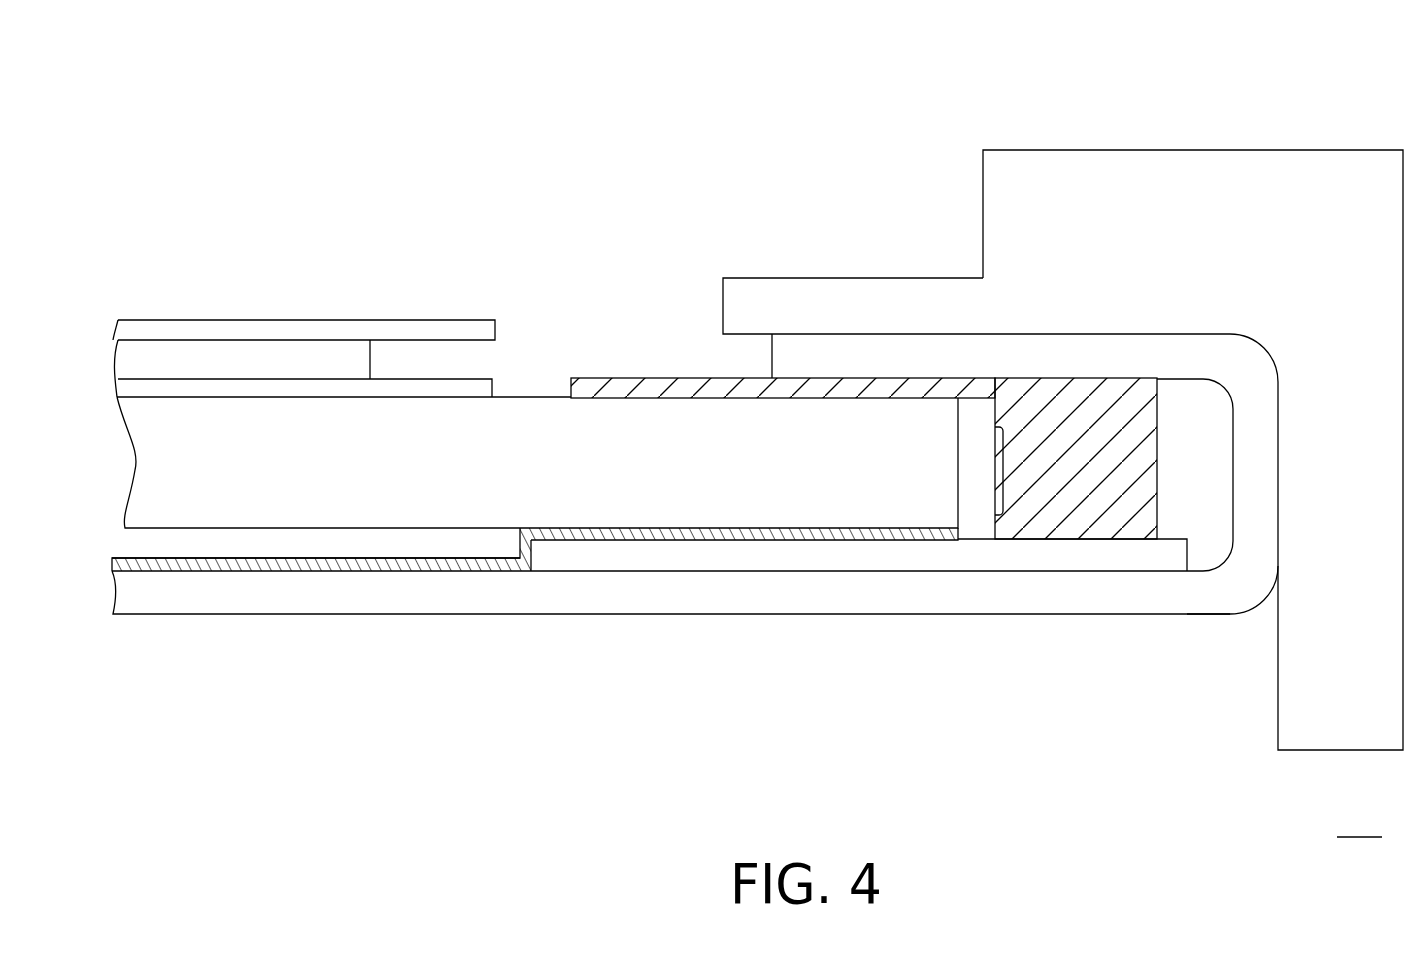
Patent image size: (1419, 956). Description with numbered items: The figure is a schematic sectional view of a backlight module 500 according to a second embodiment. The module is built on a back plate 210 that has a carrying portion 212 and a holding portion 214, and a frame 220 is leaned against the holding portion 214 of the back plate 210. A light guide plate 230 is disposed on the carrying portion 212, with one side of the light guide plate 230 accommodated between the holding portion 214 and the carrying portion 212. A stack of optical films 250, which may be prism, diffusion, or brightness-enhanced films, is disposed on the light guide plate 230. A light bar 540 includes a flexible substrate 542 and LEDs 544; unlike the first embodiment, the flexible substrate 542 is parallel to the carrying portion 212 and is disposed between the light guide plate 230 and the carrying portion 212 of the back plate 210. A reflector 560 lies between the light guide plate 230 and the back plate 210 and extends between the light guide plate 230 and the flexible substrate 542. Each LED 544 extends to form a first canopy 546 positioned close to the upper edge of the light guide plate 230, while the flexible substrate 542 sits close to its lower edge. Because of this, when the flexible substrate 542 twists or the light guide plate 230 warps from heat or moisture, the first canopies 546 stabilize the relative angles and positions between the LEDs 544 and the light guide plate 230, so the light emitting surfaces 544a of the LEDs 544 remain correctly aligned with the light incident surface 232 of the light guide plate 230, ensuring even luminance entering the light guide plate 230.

The backlight module 500 is at (1360, 818).
The frame 220 is at (1273, 165).
The light incident surface 232 is at (962, 430).
The optical film 250 is at (162, 390).
The light guide plate 230 is at (536, 405).
The first canopy 546 is at (660, 387).
The light emitting diode 544 is at (1068, 527).
The light emitting surface 544a is at (990, 470).
The flexible substrate 542 is at (1175, 558).
The light bar 540 is at (1072, 702).
The carrying portion 212 is at (788, 588).
The holding portion 214 is at (867, 363).
The back plate 210 is at (772, 704).
The reflector 560 is at (318, 571).